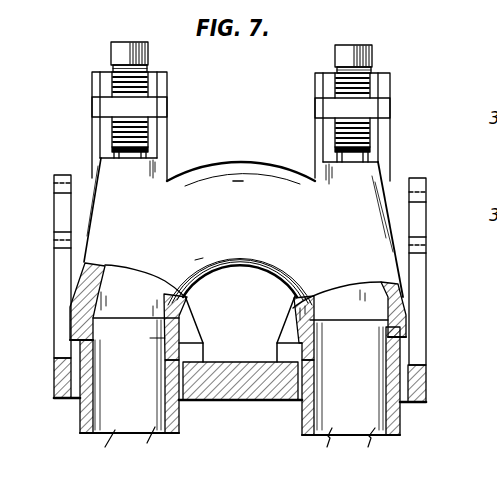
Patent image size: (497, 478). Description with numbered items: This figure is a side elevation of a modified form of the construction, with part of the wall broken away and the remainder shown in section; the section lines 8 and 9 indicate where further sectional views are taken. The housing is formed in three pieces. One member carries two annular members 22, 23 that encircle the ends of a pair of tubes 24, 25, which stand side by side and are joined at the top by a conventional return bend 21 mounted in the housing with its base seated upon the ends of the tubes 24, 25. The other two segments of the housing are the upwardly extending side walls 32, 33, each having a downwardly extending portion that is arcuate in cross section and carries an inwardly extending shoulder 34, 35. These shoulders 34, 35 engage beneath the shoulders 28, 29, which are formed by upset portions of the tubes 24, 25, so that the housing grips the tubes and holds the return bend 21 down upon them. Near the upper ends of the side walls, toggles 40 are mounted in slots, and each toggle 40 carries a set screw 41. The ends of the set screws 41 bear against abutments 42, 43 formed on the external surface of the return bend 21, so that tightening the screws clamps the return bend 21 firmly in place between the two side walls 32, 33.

The section line 8- 8 is at (353, 42).
The section line 9- 9 is at (50, 143).
The return bend 21 is at (241, 281).
The annular member 22 is at (55, 387).
The annular member 23 is at (420, 390).
The tube 24 is at (129, 393).
The tube 25 is at (351, 387).
The shoulder 28 is at (163, 340).
The shoulder 29 is at (384, 340).
The upwardly extending side wall 32 is at (58, 267).
The upwardly extending side wall 33 is at (417, 275).
The inwardly extending shoulder 34 is at (72, 341).
The inwardly extending shoulder 35 is at (407, 338).
The toggle 40 is at (156, 107).
The set screw 41 is at (147, 62).
The abutment 42 is at (120, 210).
The abutment 43 is at (363, 229).